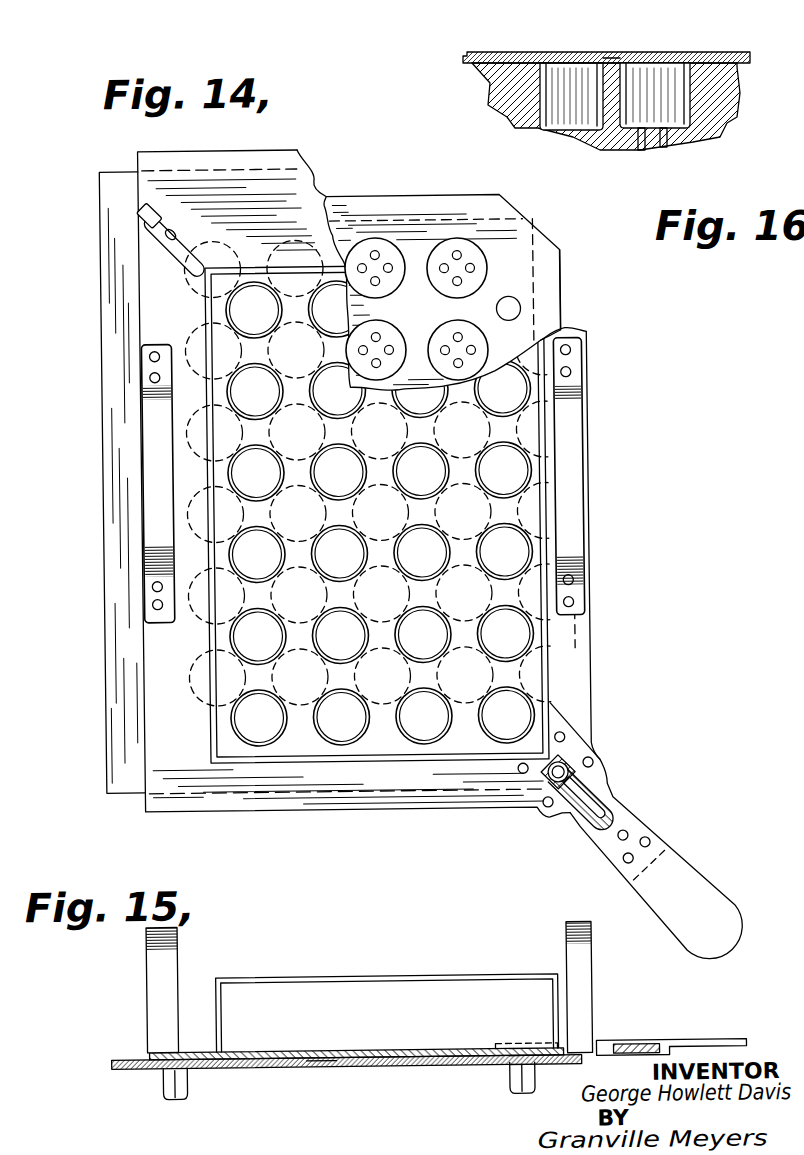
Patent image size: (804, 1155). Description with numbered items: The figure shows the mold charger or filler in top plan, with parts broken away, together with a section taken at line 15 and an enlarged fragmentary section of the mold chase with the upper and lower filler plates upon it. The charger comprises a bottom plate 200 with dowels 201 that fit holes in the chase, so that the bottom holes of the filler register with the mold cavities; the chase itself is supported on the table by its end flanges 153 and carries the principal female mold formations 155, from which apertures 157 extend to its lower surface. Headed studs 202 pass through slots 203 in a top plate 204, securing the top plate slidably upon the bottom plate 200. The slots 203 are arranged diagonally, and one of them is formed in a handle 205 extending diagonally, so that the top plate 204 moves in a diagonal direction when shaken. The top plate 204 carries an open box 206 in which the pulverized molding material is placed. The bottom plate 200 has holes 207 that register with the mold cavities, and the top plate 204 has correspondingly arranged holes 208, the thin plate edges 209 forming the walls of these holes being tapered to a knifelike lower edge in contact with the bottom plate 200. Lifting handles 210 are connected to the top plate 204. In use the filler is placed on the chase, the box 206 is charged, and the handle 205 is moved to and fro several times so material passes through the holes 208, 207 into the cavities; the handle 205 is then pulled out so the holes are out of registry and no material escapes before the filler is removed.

In FIG. 14, the flange 153 is at (428, 200).
In FIG. 14, the female mold formation 155 is at (480, 259).
In FIG. 16, the female mold formation 155 is at (662, 88).
In FIG. 14, the aperture 157 is at (461, 255).
In FIG. 16, the aperture 157 is at (668, 150).
In FIG. 14, the section line 15 is at (100, 472).
In FIG. 15, the bottom plate 200 is at (395, 1067).
In FIG. 16, the bottom plate 200 is at (478, 90).
In FIG. 15, the dowel 201 is at (173, 1085).
In FIG. 14, the headed stud 202 is at (148, 212).
In FIG. 14, the slot 203 is at (171, 235).
In FIG. 14, the top plate 204 is at (293, 779).
In FIG. 15, the top plate 204 is at (430, 1052).
In FIG. 16, the top plate 204 is at (658, 52).
In FIG. 14, the handle 205 is at (688, 884).
In FIG. 15, the handle 205 is at (707, 1049).
In FIG. 14, the open box 206 is at (375, 755).
In FIG. 15, the open box 206 is at (327, 988).
In FIG. 14, the hole 207 is at (546, 670).
In FIG. 15, the hole 207 is at (306, 1066).
In FIG. 16, the hole 207 is at (567, 63).
In FIG. 14, the hole 208 is at (510, 642).
In FIG. 15, the hole 208 is at (426, 1064).
In FIG. 16, the hole 208 is at (601, 58).
In FIG. 16, the thin plate edge 209 is at (590, 62).
In FIG. 14, the lifting handle 210 is at (160, 532).
In FIG. 15, the lifting handle 210 is at (165, 926).